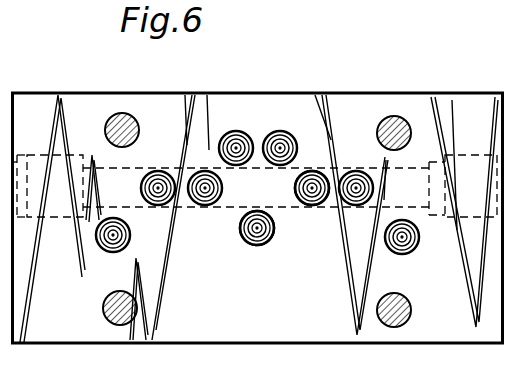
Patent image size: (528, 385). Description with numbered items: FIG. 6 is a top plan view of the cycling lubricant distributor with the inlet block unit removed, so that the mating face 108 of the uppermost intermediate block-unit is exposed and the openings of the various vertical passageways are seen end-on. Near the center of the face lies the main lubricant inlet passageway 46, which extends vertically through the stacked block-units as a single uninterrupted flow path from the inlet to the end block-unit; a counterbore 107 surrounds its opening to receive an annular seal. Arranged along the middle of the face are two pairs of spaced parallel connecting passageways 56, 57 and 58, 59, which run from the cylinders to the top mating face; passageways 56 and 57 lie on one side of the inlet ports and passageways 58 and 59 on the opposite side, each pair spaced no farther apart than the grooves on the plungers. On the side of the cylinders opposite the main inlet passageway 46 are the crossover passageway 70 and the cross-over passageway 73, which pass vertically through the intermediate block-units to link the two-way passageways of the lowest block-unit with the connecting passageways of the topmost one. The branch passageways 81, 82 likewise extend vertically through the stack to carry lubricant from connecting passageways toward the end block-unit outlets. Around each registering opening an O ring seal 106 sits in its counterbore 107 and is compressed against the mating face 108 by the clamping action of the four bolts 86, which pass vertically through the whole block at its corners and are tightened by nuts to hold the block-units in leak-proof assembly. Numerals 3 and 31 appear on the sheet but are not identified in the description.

The bolts 86 is at (138, 128).
The cross-over passageway 73 is at (236, 147).
The crossover passageway 70 is at (281, 147).
The connecting passageway 56 is at (160, 193).
The connecting passageway 57 is at (205, 190).
The connecting passageway 58 is at (312, 190).
The connecting passageway 59 is at (356, 190).
The O ring seal 106 is at (312, 173).
The branch passageway 81 is at (112, 237).
The main lubricant inlet passageway 46 is at (257, 231).
The counterbore 107 is at (271, 235).
The branch passageway 82 is at (402, 239).
The mating face 108 is at (326, 292).
The section line 3 is at (485, 217).
The edge member 31 is at (5, 356).